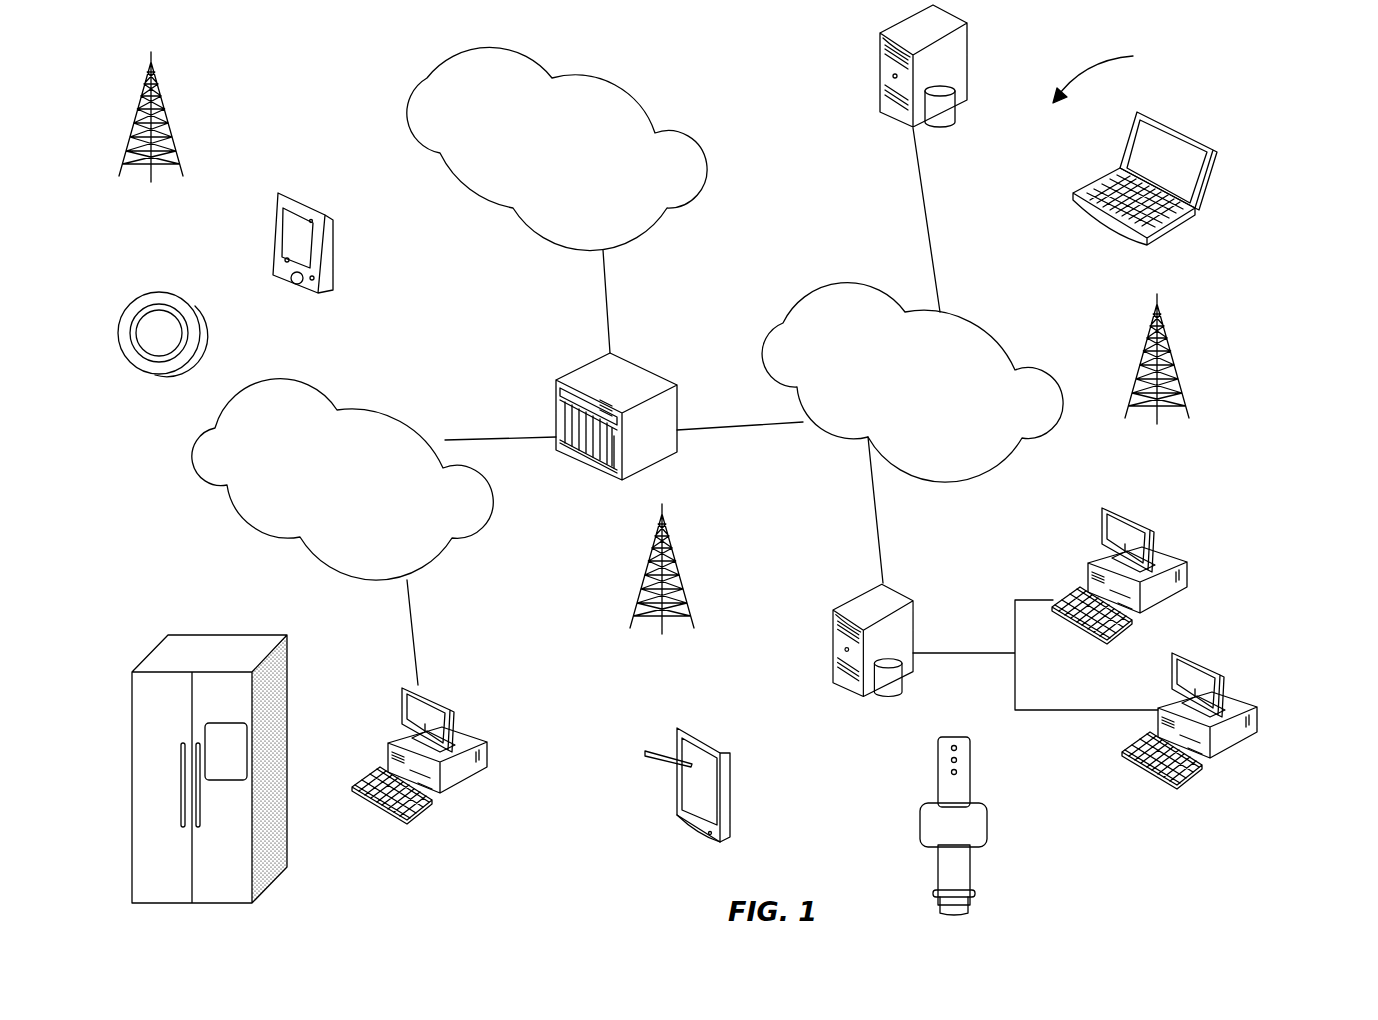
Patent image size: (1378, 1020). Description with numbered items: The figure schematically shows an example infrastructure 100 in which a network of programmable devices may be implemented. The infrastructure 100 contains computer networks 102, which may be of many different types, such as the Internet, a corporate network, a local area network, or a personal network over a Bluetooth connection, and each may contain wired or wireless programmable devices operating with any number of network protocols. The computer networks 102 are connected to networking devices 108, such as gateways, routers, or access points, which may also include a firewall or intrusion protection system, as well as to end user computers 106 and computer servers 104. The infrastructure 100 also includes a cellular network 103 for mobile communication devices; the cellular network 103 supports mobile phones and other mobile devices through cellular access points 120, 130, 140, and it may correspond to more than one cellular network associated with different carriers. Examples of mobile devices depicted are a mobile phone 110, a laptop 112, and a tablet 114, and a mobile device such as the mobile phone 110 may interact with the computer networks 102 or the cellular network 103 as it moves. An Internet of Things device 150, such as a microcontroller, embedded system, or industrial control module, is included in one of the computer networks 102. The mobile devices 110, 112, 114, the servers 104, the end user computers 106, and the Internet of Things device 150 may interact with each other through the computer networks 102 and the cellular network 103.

The infrastructure 100 is at (1111, 74).
The computer networks 102 is at (1005, 347).
The cellular network 103 is at (600, 83).
The computer servers 104 is at (886, 63).
The end user computers 106 is at (488, 757).
The networking devices 108 is at (640, 367).
The mobile phone 110 is at (311, 199).
The laptop 112 is at (1188, 133).
The tablet 114 is at (727, 720).
The cellular access point 120 is at (662, 586).
The cellular access point 130 is at (1157, 375).
The cellular access point 140 is at (151, 132).
The Internet of Things device 150 is at (150, 291).